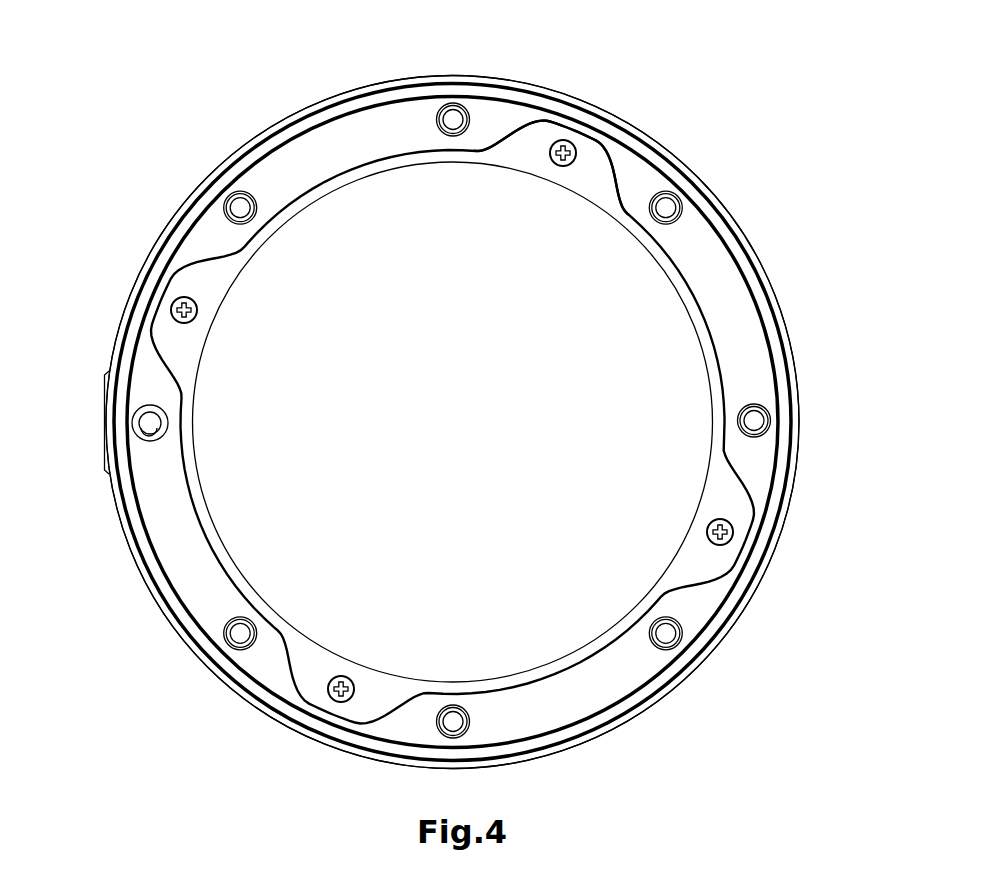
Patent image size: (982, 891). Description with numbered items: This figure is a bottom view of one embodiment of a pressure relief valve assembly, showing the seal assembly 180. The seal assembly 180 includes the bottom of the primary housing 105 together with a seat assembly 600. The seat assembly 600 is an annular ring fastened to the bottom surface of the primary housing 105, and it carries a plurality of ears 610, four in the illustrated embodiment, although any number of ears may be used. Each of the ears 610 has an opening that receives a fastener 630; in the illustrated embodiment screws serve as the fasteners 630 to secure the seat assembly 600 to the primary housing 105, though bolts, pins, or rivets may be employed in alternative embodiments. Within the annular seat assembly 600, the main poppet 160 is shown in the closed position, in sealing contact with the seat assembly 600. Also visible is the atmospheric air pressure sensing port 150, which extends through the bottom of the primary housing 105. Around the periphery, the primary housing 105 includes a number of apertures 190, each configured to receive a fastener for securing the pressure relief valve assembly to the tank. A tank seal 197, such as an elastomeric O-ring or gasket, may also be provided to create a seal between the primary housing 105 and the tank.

The seal assembly 180 is at (155, 153).
The primary housing 105 is at (332, 148).
The apertures 190 is at (454, 112).
The ears 610 is at (527, 153).
The fastener 630 is at (577, 148).
The seat assembly 600 is at (683, 297).
The main poppet 160 is at (542, 395).
The tank seal 197 is at (755, 565).
The atmospheric air pressure sensing port 150 is at (147, 442).